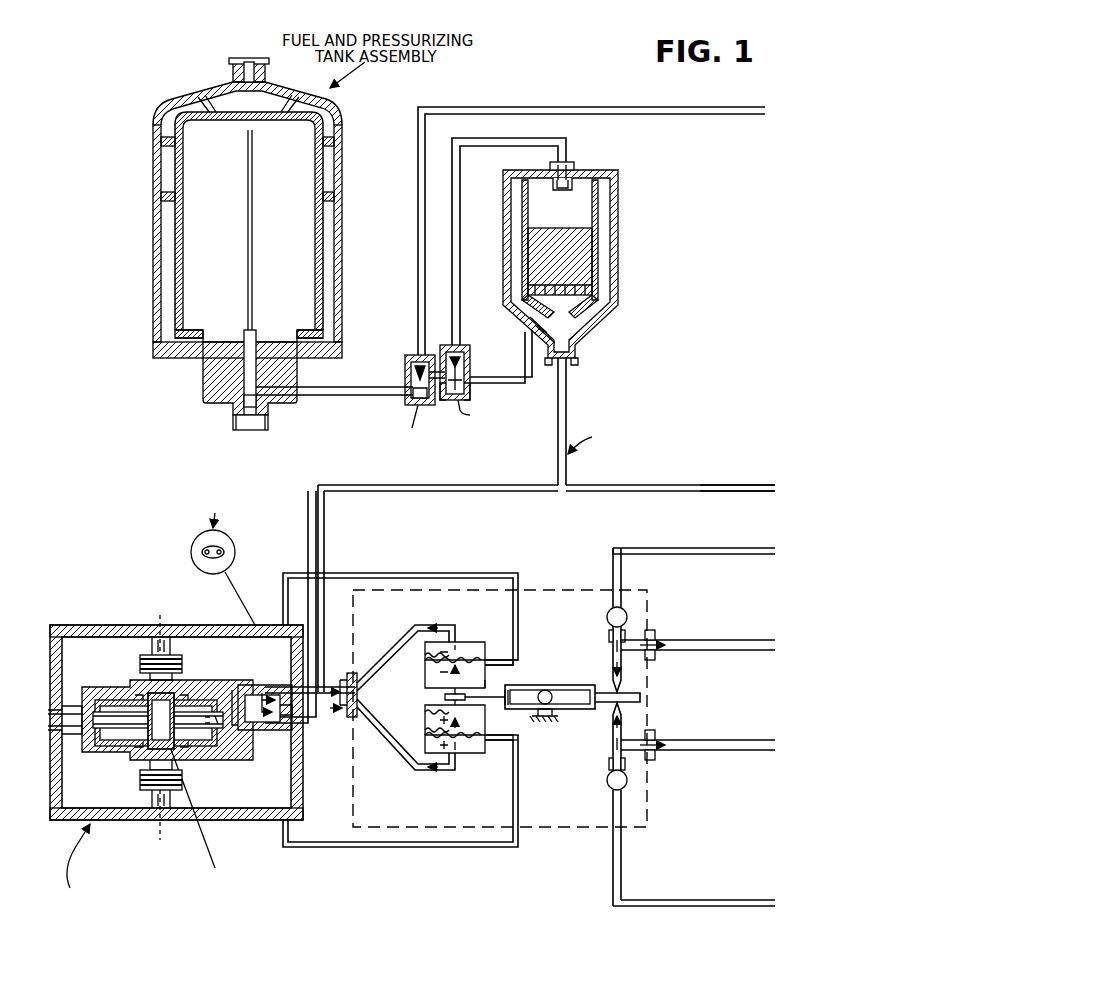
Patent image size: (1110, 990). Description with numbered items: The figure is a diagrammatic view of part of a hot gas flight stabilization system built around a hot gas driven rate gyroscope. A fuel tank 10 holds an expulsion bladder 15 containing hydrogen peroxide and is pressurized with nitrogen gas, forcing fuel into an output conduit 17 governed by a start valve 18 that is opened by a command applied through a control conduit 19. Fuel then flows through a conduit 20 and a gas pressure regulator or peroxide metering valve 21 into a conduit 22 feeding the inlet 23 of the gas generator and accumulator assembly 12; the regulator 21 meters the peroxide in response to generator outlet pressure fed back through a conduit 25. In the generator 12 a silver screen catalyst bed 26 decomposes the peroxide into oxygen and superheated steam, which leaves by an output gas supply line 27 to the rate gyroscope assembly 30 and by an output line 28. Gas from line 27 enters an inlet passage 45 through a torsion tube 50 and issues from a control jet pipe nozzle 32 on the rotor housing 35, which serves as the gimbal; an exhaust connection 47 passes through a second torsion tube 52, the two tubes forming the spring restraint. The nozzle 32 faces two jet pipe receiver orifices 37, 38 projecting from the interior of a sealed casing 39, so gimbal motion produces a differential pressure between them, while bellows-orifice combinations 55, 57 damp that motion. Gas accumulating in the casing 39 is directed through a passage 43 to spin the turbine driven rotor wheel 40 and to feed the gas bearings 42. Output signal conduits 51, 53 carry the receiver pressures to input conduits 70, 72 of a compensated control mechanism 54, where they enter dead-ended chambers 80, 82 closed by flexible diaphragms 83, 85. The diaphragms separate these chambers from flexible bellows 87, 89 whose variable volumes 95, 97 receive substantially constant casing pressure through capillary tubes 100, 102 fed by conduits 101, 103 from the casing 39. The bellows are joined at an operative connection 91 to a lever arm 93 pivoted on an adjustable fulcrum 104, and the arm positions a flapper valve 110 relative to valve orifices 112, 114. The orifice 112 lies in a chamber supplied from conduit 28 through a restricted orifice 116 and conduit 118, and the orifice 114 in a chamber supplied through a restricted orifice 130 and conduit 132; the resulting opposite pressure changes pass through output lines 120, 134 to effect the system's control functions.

The fuel tank 10 is at (183, 82).
The gas generator and accumulator assembly 12 is at (622, 280).
The expulsion bladder 15 is at (314, 142).
The output line 17 is at (347, 396).
The start valve 18 is at (408, 357).
The control conduit 19 is at (588, 107).
The conduit 20 is at (443, 350).
The gas pressure regulator 21 is at (470, 366).
The conduit 22 is at (464, 237).
The inlet 23 is at (578, 172).
The conduit 25 is at (528, 350).
The silver screen catalyst bed 26 is at (602, 250).
The output gas supply line 27 is at (569, 402).
The output line 28 is at (648, 491).
The rate gyroscope assembly 30 is at (122, 620).
The control jet pipe nozzle 32 is at (246, 686).
The rotor housing 35 is at (204, 688).
The jet pipe receiver orifice 37 is at (204, 552).
The jet pipe receiver orifice 38 is at (222, 552).
The sealed casing 39 is at (212, 625).
The gyroscope rotor wheel 40 is at (218, 760).
The gas bearings 42 is at (115, 700).
The passage 43 is at (242, 760).
The inlet passage 45 is at (270, 731).
The outlet passage 47 is at (66, 712).
The torsion tube 50 is at (256, 731).
The output signal conduit 51 is at (347, 681).
The torsion tube 52 is at (68, 730).
The output signal conduit 53 is at (350, 718).
The compensated control mechanism 54 is at (541, 584).
The bellows-orifice combination 55 is at (142, 667).
The bellows-orifice combination 57 is at (180, 783).
The input conduit 70 is at (394, 640).
The input conduit 72 is at (396, 745).
The dead-ended chamber 80 is at (470, 645).
The dead-ended chamber 82 is at (478, 753).
The flexible diaphragm 83 is at (482, 660).
The flexible diaphragm 85 is at (485, 728).
The flexible bellows 87 is at (492, 676).
The flexible bellows 89 is at (430, 714).
The operative connection 91 is at (444, 697).
The lever arm 93 is at (515, 690).
The variable volume 95 is at (428, 664).
The variable volume 97 is at (436, 730).
The capillary tube 100 is at (520, 648).
The conduit 101 is at (408, 573).
The capillary tube 102 is at (518, 752).
The conduit 103 is at (420, 848).
The fulcrum 104 is at (547, 695).
The flapper valve 110 is at (640, 695).
The valve orifice 112 is at (612, 686).
The valve orifice 114 is at (613, 708).
The restricted orifice 116 is at (611, 636).
The conduit 118 is at (696, 552).
The output line 120 is at (708, 650).
The restricted orifice 130 is at (610, 766).
The conduit 132 is at (714, 906).
The output line 134 is at (714, 750).